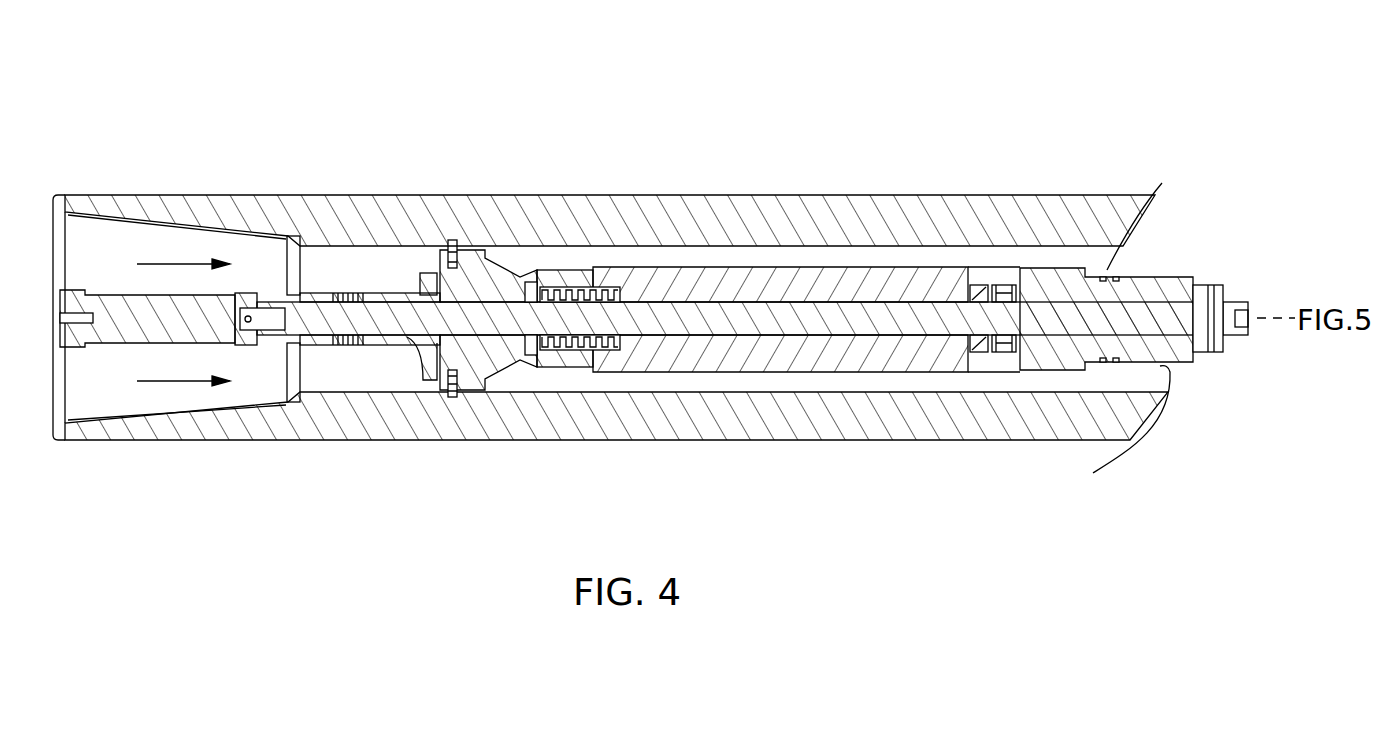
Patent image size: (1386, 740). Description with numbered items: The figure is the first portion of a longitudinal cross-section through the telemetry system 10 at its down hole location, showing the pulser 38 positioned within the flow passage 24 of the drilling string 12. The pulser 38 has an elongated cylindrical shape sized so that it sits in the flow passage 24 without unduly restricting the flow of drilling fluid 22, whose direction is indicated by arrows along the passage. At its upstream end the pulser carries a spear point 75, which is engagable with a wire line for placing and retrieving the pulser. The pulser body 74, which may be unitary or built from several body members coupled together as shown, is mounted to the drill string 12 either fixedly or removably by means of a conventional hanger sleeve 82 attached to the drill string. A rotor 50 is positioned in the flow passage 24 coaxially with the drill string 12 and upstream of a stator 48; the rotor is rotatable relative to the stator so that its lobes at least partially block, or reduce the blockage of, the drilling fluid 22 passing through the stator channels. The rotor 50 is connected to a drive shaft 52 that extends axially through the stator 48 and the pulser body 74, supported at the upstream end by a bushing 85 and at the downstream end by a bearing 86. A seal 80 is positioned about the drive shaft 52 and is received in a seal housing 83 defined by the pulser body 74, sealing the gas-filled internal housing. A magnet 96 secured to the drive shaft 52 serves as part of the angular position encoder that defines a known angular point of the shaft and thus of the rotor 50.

The telemetry system 10 is at (712, 126).
The drilling string 12 is at (310, 197).
The drilling fluid 22 is at (172, 262).
The flow passage 24 is at (522, 265).
The pulser 38 is at (815, 375).
The stator 48 is at (455, 245).
The rotor 50 is at (448, 392).
The drive shaft 52 is at (765, 322).
The pulser body 74 is at (782, 275).
The spear point 75 is at (110, 333).
The seal 80 is at (600, 290).
The hanger sleeve 82 is at (372, 390).
The seal housing 83 is at (600, 355).
The bushing 85 is at (520, 355).
The bearing 86 is at (1000, 285).
The magnet 96 is at (1203, 290).